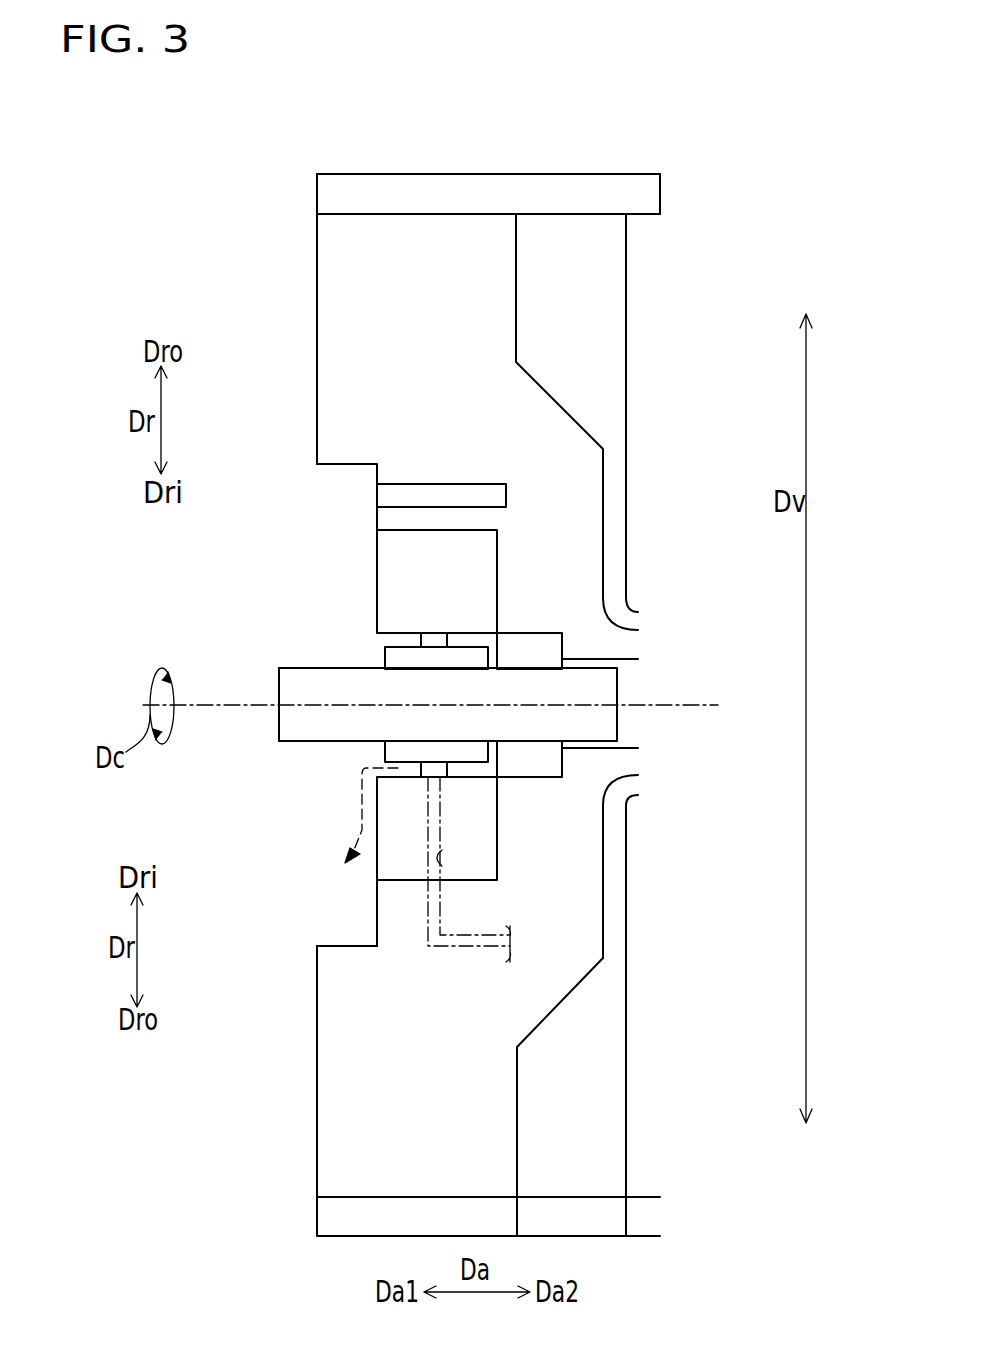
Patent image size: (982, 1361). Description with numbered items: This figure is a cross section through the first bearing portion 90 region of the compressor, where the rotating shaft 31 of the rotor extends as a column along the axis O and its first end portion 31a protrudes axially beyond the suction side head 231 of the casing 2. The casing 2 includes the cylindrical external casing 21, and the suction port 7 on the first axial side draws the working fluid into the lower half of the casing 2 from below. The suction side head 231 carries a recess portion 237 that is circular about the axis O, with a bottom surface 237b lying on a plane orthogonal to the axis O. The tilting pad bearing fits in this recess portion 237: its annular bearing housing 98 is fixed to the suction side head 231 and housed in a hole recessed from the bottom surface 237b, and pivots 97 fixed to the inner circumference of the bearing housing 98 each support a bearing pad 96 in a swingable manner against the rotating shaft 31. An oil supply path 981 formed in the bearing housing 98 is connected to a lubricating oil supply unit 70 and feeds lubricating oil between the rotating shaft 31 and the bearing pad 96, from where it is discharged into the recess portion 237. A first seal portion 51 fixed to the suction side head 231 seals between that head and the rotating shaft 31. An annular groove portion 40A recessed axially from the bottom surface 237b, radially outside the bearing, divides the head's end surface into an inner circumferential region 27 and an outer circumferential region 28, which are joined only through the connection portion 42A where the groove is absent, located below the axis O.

The casing 2 is at (632, 167).
The external casing 21 is at (557, 195).
The suction side head 231 is at (343, 310).
The recess portion 237 is at (322, 480).
The outer circumferential region 28 is at (362, 470).
The inner circumferential region 27 is at (377, 517).
The annular groove portion 40A is at (447, 493).
The bearing housing 98 is at (473, 557).
The pivot 97 is at (437, 643).
The bearing pad 96 is at (472, 659).
The first seal portion 51 is at (594, 660).
The rotating shaft 31 is at (597, 690).
The first end portion 31a is at (277, 695).
The air flow 90 is at (344, 816).
The oil supply path 981 is at (445, 866).
The lubricating oil supply unit 70 is at (473, 948).
The connection portion 42A is at (407, 923).
The bottom surface 237b is at (377, 922).
The suction port 7 is at (595, 1084).
The axis O is at (767, 667).